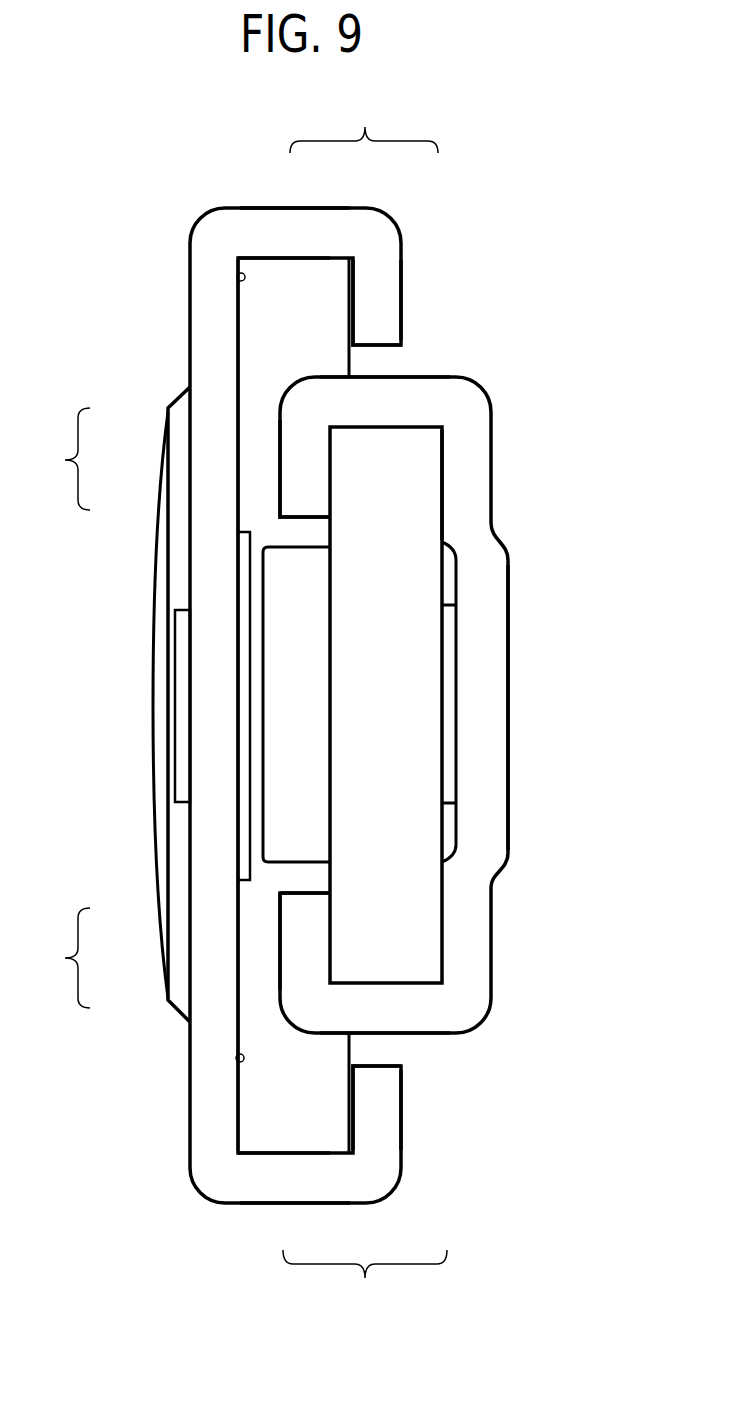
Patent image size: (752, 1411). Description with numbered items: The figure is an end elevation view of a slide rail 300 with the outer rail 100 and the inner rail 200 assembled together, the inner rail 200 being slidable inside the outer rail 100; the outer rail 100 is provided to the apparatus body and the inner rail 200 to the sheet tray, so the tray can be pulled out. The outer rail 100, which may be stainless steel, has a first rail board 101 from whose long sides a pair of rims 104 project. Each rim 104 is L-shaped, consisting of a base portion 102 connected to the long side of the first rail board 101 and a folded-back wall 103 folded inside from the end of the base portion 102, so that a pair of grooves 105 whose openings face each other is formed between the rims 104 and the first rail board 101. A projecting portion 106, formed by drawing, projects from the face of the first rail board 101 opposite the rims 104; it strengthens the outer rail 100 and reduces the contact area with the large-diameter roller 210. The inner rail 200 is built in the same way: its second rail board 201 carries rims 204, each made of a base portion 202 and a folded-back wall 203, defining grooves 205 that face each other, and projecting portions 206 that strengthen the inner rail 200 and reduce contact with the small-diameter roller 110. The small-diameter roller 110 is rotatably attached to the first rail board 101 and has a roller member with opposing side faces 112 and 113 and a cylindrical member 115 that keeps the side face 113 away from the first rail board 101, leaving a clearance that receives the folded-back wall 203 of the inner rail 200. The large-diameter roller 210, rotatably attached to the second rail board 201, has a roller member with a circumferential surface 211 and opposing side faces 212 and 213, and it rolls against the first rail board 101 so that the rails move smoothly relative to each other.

The slide rail 300 is at (143, 188).
The outer rail 100 is at (167, 340).
The first rail board 101 is at (205, 1122).
The base portion 102 is at (313, 218).
The folded-back wall 103 is at (383, 283).
The rim 104 is at (365, 705).
The groove 105 is at (288, 267).
The projecting portion 106 is at (160, 763).
The small-diameter roller 110 is at (425, 643).
The side face 112 is at (442, 475).
The side face 113 is at (327, 910).
The cylindrical member 115 is at (282, 667).
The inner rail 200 is at (515, 440).
The second rail board 201 is at (505, 948).
The base portion 202 is at (383, 393).
The folded-back wall 203 is at (300, 492).
The rim 204 is at (55, 708).
The groove 205 is at (378, 435).
The projecting portion 206 is at (495, 752).
The large-diameter roller 210 is at (263, 368).
The circumferential surface 211 is at (265, 258).
The side face 212 is at (237, 277).
The side face 213 is at (352, 313).